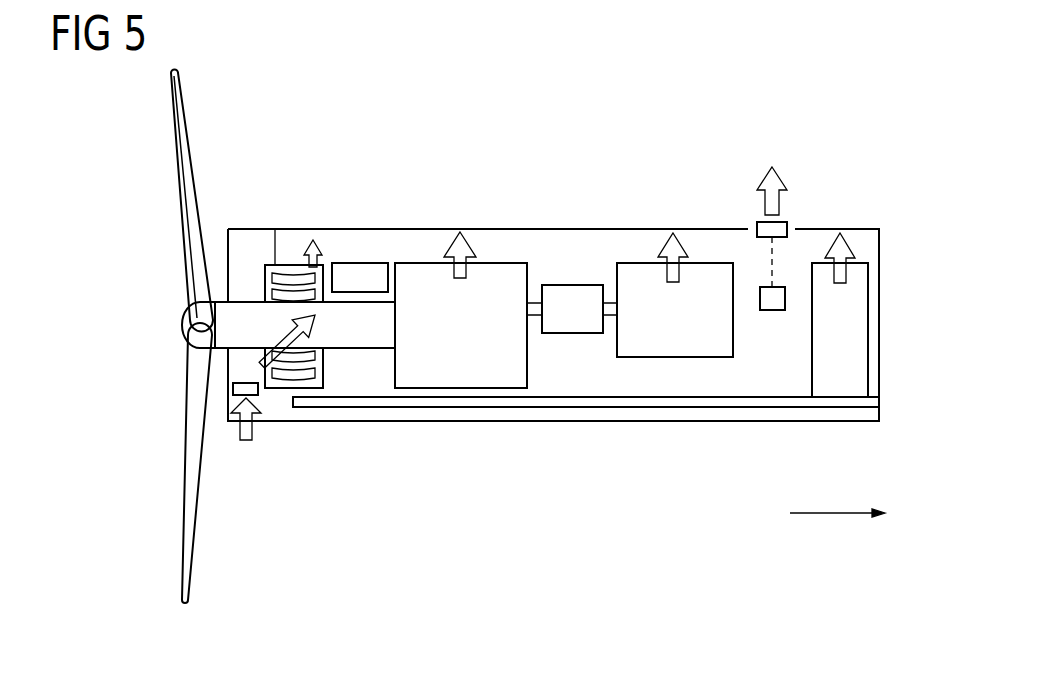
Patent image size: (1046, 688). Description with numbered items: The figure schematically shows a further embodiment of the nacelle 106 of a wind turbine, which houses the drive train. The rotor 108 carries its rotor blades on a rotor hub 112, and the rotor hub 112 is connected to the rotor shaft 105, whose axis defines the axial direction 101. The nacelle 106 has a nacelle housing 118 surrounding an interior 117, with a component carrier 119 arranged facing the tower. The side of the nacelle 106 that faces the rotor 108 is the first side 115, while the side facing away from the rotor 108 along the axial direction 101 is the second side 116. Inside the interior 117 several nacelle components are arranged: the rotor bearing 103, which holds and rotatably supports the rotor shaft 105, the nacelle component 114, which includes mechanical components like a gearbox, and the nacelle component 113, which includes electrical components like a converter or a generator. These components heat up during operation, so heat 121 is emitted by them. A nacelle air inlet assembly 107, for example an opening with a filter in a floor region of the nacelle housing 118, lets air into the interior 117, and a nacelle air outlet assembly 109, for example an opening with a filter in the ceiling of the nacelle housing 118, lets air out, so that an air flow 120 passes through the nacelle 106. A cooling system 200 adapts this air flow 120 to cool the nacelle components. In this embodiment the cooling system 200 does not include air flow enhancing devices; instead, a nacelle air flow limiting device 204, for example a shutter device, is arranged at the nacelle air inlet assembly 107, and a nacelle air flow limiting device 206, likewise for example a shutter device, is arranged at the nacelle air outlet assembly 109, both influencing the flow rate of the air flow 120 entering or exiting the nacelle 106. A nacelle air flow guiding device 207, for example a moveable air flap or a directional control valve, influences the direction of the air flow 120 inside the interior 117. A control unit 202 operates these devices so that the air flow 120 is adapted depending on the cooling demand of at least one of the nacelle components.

The axial direction 101 is at (833, 512).
The rotor bearing 103 is at (284, 276).
The rotor shaft 105 is at (237, 313).
The nacelle 106 is at (427, 229).
The nacelle air inlet assembly 107 is at (258, 422).
The rotor 108 is at (145, 176).
The nacelle air outlet assembly 109 is at (793, 224).
The rotor hub 112 is at (185, 322).
The nacelle component 113 is at (868, 332).
The nacelle component 114 is at (530, 372).
The first side 115 is at (192, 522).
The second side 116 is at (848, 211).
The interior 117 is at (561, 240).
The nacelle housing 118 is at (655, 228).
The component carrier 119 is at (560, 407).
The air flow 120 is at (772, 168).
The heat 121 is at (313, 240).
The cooling system 200 is at (828, 194).
The control unit 202 is at (772, 312).
The nacelle air flow limiting device 204 is at (233, 389).
The nacelle air flow limiting device 206 is at (757, 222).
The nacelle air flow guiding device 207 is at (352, 262).